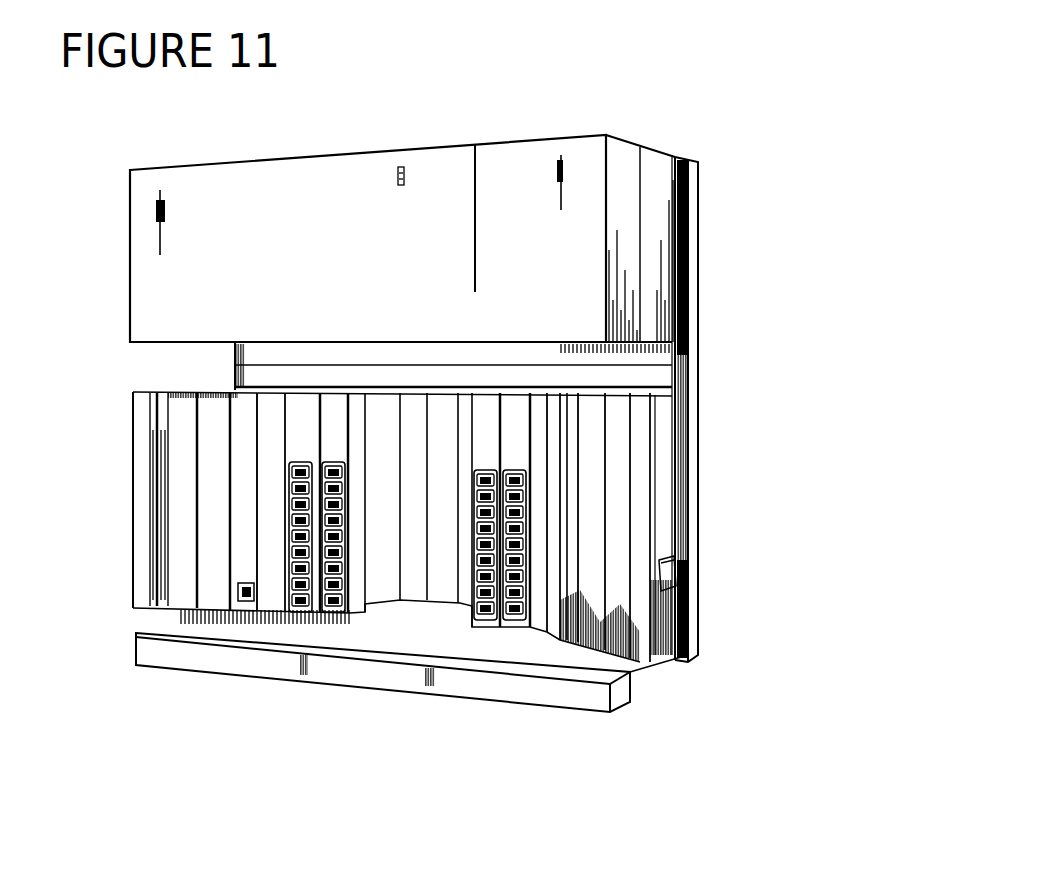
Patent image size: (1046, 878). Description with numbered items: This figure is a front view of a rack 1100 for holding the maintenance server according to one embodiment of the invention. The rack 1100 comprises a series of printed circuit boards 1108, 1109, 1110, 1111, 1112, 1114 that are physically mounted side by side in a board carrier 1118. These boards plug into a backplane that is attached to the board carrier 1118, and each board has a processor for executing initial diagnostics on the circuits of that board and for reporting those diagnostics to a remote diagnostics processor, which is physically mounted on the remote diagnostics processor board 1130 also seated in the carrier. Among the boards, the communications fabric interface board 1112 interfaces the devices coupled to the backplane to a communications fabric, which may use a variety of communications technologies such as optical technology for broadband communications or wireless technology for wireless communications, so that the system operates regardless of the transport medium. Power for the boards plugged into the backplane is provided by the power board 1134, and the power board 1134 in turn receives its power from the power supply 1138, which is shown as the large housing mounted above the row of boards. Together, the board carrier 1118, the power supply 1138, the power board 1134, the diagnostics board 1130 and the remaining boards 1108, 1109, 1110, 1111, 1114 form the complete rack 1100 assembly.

The rack 1100 is at (790, 135).
The power supply 1138 is at (447, 160).
The remote diagnostics processor board 1130 is at (190, 534).
The printed circuit board 1108 is at (212, 490).
The printed circuit board 1109 is at (237, 442).
The printed circuit board 1110 is at (280, 412).
The printed circuit board 1111 is at (302, 412).
The communications fabric interface board 1112 is at (335, 412).
The printed circuit board 1114 is at (510, 412).
The power board 1134 is at (578, 466).
The board carrier 1118 is at (660, 653).